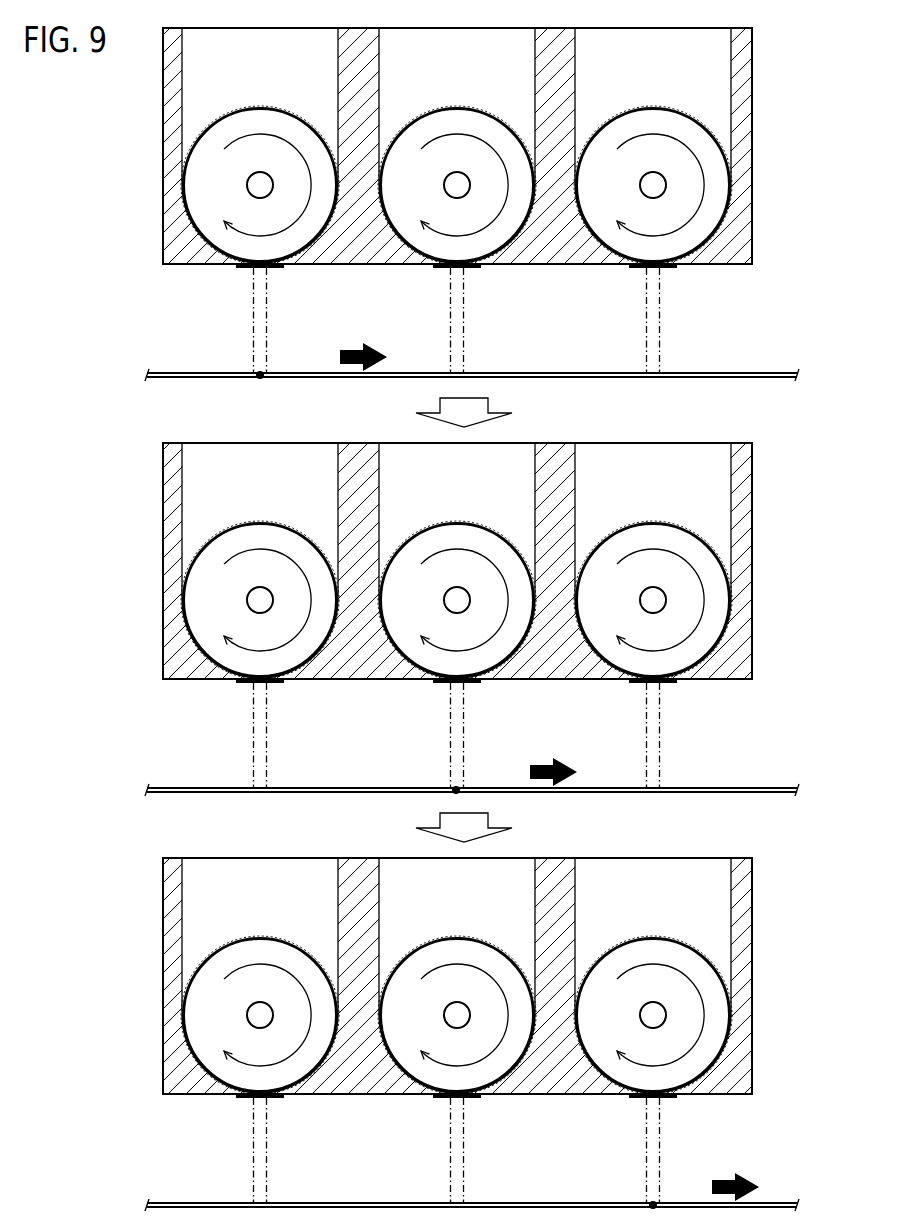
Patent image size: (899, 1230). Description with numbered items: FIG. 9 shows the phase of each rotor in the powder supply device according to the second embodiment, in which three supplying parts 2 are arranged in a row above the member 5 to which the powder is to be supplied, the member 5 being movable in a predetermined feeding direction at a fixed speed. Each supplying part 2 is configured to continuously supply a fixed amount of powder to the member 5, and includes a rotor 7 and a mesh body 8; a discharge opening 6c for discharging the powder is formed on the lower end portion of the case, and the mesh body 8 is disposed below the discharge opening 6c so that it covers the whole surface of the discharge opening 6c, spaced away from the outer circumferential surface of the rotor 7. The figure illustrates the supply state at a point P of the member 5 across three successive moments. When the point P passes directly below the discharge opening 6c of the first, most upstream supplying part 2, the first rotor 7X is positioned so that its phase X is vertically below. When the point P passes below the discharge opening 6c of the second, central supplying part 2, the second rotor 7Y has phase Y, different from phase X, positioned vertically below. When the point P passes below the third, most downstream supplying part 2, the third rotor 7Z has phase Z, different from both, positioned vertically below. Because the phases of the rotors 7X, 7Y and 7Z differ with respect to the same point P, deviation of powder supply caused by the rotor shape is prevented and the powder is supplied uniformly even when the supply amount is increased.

The supplying part 2 is at (509, 561).
The member to which the powder is to be supplied 5 is at (472, 762).
The discharge opening 6c is at (436, 735).
The rotor 7 is at (456, 565).
The first rotor 7X is at (260, 565).
The second rotor 7Y is at (457, 565).
The third rotor 7Z is at (653, 565).
The mesh body 8 is at (475, 704).
The point P is at (475, 764).